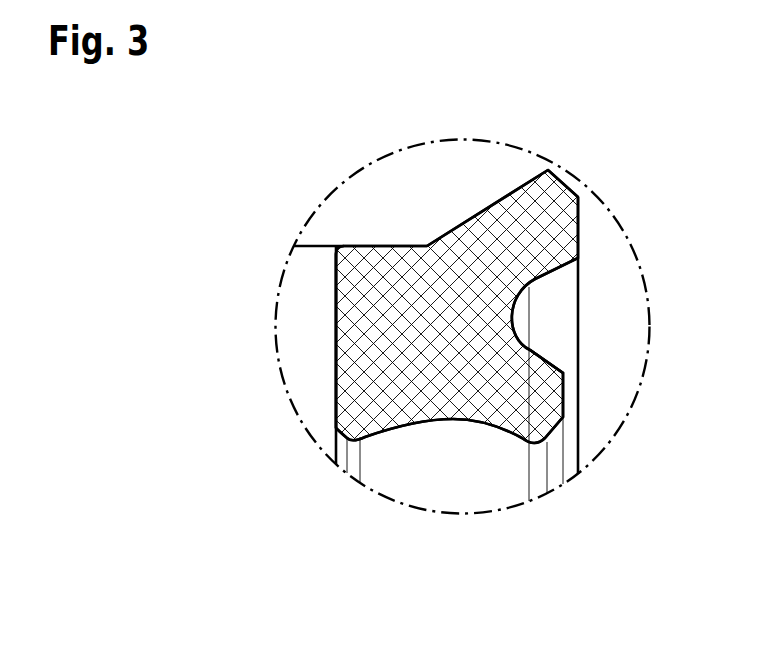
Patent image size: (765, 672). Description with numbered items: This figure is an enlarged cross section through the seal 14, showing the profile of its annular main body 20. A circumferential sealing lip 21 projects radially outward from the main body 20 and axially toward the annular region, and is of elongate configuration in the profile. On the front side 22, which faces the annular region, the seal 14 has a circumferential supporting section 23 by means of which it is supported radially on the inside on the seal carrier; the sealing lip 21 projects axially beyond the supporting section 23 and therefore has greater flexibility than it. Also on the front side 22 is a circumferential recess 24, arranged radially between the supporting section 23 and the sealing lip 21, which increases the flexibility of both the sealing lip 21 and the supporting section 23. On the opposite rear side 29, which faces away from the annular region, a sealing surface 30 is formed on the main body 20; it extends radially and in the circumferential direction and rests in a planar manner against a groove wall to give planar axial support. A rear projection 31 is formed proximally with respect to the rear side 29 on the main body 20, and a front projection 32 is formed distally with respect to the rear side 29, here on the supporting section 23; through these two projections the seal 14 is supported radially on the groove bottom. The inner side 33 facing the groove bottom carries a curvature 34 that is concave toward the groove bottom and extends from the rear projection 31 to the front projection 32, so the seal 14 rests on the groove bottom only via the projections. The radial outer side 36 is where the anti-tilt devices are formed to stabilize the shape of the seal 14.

The seal 14 is at (428, 295).
The main body 20 is at (382, 315).
The sealing lip 21 is at (562, 144).
The front side 22 is at (638, 335).
The supporting section 23 is at (614, 394).
The recess 24 is at (605, 313).
The rear side 29 is at (273, 384).
The sealing surface 30 is at (277, 293).
The rear projection 31 is at (288, 449).
The front projection 32 is at (518, 506).
The inner side 33 is at (402, 503).
The curvature 34 is at (466, 503).
The outer side 36 is at (487, 167).